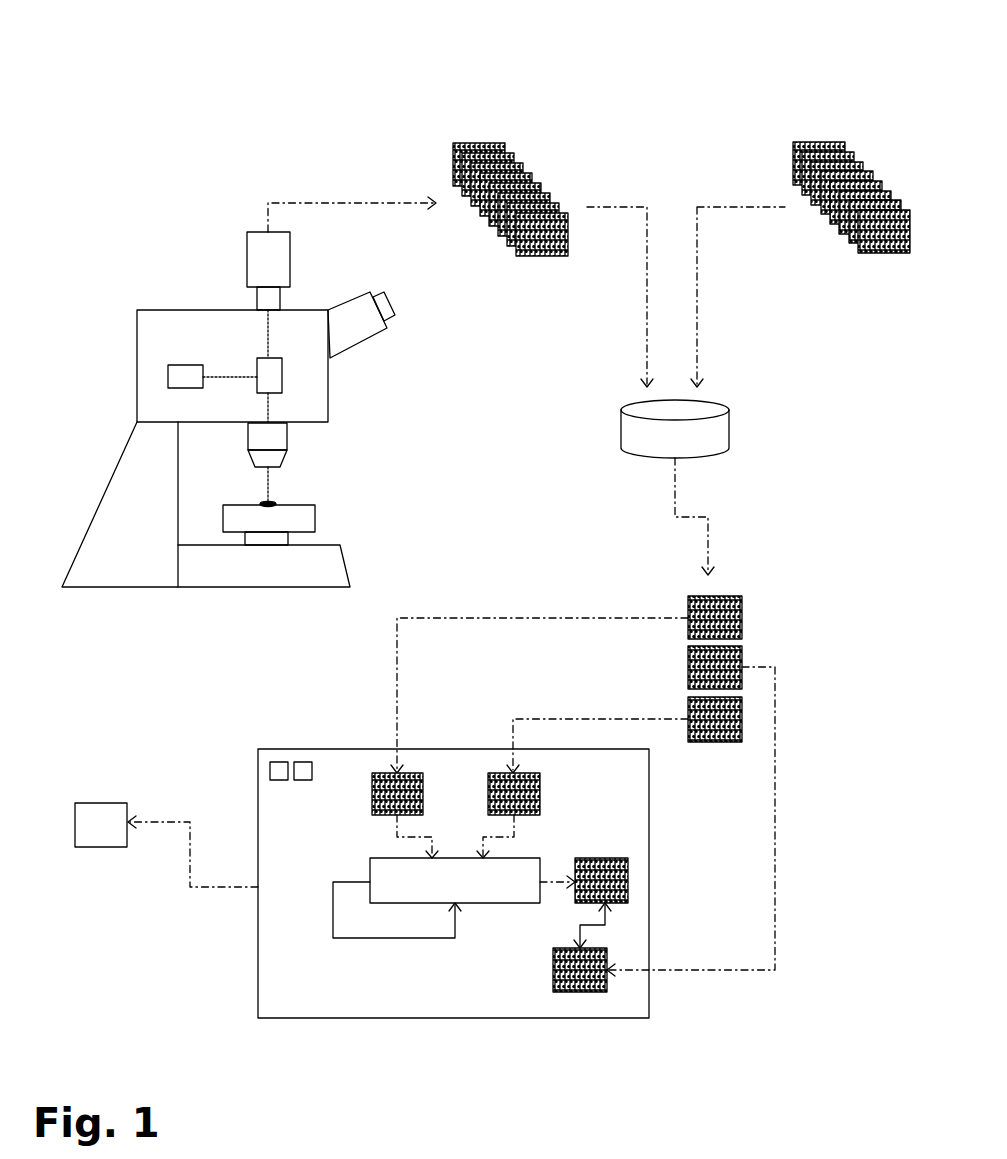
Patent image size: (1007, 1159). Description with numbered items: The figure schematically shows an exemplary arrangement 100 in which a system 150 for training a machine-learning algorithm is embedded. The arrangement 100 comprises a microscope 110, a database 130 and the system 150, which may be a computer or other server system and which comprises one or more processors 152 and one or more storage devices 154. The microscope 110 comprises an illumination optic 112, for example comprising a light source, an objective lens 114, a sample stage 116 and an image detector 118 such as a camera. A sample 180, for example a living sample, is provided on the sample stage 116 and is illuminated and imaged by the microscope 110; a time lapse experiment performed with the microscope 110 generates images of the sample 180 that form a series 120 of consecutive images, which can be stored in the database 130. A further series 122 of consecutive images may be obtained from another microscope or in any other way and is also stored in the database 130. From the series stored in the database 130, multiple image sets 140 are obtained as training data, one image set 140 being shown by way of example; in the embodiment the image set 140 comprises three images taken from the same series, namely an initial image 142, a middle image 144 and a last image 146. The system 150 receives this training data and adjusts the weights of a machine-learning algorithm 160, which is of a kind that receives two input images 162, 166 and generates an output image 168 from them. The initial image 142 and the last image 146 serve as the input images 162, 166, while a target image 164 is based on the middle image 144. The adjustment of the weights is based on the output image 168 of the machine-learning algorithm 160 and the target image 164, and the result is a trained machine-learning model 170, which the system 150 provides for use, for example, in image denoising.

The arrangement 100 is at (214, 88).
The microscope 110 is at (151, 277).
The illumination optic 112 is at (168, 377).
The objective lens 114 is at (287, 450).
The sample stage 116 is at (315, 518).
The image detector 118 is at (290, 262).
The series of consecutive images 120 is at (555, 130).
The series of consecutive images 122 is at (811, 108).
The database 130 is at (729, 428).
The image set 140 is at (616, 580).
The initial image 142 is at (742, 617).
The middle image 144 is at (688, 673).
The last image 146 is at (715, 742).
The system 150 is at (258, 1007).
The processor 152 is at (267, 768).
The storage device 154 is at (305, 762).
The machine-learning algorithm 160 is at (500, 903).
The input image 162 is at (387, 773).
The target image 164 is at (592, 992).
The input image 166 is at (490, 773).
The output image 168 is at (628, 878).
The trained machine-learning model 170 is at (100, 847).
The sample 180 is at (277, 503).